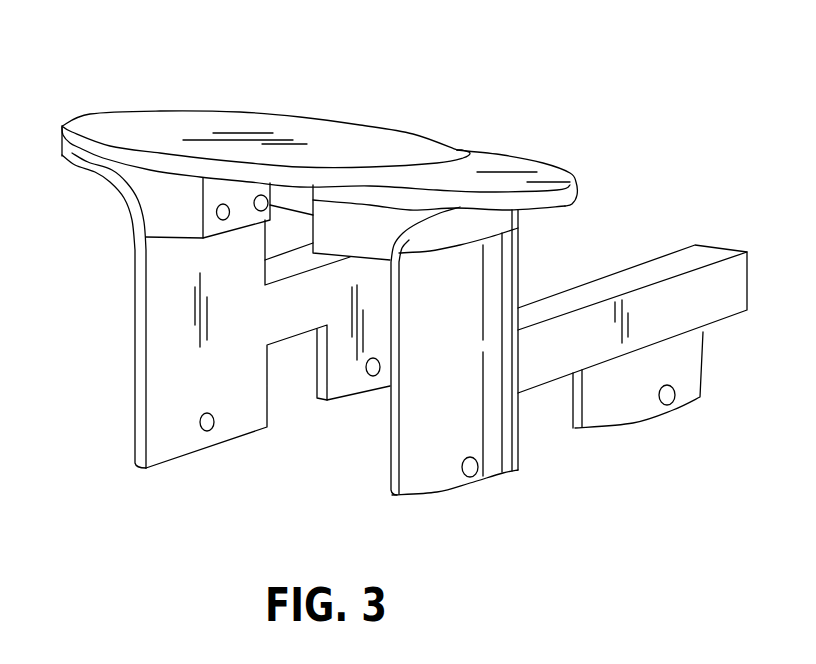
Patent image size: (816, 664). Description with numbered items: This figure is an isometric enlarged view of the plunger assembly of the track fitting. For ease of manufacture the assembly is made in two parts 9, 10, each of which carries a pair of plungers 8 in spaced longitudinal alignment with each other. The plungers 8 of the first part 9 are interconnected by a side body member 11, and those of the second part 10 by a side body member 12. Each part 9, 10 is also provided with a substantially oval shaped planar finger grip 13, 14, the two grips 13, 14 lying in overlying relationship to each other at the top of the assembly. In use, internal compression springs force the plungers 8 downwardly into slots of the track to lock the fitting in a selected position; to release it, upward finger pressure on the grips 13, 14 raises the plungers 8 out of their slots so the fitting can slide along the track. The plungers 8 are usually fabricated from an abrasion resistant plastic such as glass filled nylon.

The plunger 8 is at (173, 430).
The first plunger part 9 is at (130, 303).
The second plunger part 10 is at (525, 264).
The side body member 11 is at (288, 328).
The side body member 12 is at (550, 372).
The finger grip 13 is at (283, 128).
The finger grip 14 is at (517, 163).